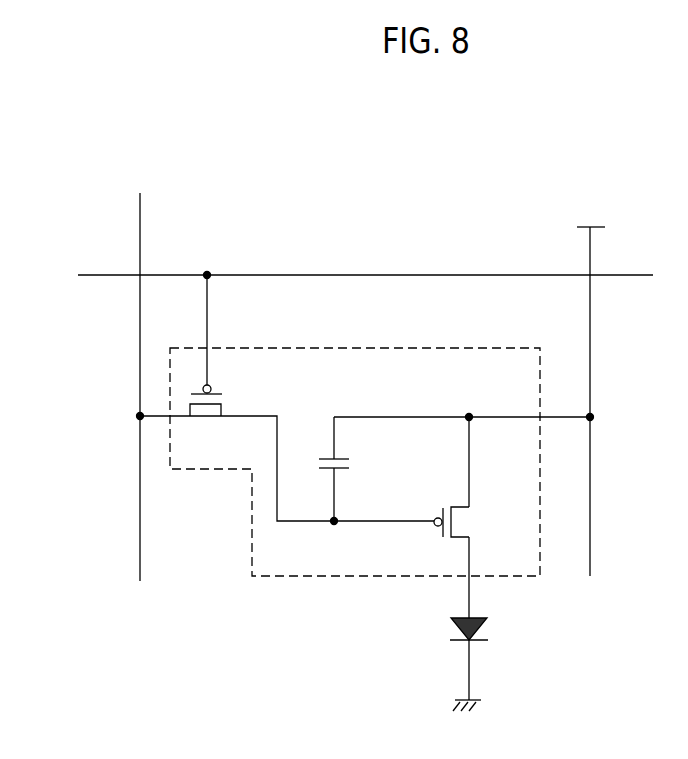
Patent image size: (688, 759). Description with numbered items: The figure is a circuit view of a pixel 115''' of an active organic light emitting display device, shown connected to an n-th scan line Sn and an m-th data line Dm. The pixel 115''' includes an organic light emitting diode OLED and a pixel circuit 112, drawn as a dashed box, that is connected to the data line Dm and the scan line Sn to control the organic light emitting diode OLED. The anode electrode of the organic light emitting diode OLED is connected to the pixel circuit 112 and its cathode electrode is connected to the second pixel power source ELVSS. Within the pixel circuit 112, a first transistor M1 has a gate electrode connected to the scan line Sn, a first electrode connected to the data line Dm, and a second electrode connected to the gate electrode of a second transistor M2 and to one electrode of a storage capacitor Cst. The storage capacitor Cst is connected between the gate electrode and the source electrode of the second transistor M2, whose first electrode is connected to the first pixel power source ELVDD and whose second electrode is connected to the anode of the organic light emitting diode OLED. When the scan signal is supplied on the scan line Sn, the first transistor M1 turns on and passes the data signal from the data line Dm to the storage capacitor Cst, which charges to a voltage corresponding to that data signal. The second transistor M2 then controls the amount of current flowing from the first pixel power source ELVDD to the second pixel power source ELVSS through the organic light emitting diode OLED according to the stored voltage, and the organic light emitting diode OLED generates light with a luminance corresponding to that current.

The pixel 115''' is at (459, 124).
The data line Dm is at (140, 219).
The scan line Sn is at (112, 276).
The first pixel power source ELVDD is at (591, 387).
The pixel circuit 112 is at (346, 348).
The first transistor M1 is at (206, 361).
The storage capacitor Cst is at (351, 469).
The second transistor M2 is at (468, 517).
The organic light emitting diode OLED is at (498, 659).
The second pixel power source ELVSS is at (499, 709).